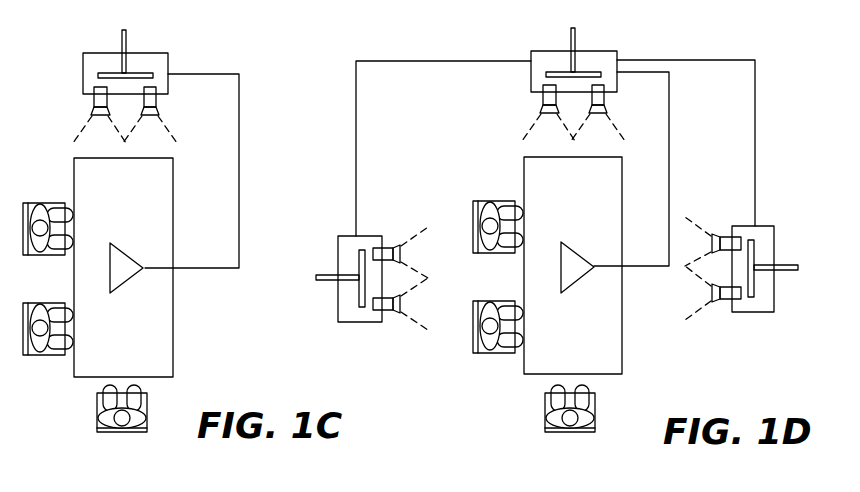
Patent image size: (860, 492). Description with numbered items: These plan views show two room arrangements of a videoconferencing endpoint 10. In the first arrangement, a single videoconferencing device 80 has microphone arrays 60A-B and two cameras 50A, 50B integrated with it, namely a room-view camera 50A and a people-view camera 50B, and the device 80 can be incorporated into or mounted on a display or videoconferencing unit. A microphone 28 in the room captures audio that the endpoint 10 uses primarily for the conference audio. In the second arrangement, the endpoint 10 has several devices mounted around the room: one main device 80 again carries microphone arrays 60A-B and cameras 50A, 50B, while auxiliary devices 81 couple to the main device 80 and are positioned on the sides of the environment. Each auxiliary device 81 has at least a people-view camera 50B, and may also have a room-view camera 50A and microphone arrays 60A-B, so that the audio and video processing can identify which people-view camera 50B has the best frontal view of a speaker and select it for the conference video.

In FIG. 1C, the endpoint 10 is at (250, 66).
In FIG. 1D, the endpoint 10 is at (702, 30).
In FIG. 1C, the microphone 28 is at (130, 285).
In FIG. 1D, the microphone 28 is at (580, 285).
In FIG. 1C, the room-view camera 50A is at (93, 98).
In FIG. 1D, the room-view camera 50A is at (541, 96).
In FIG. 1C, the people-view camera 50B is at (157, 98).
In FIG. 1D, the people-view camera 50B is at (605, 96).
In FIG. 1C, the microphone arrays 60A-B is at (127, 32).
In FIG. 1D, the microphone arrays 60A-B is at (576, 31).
In FIG. 1C, the videoconferencing device 80 is at (93, 52).
In FIG. 1D, the videoconferencing device 80 is at (541, 50).
In FIG. 1D, the auxiliary device 81 is at (340, 236).